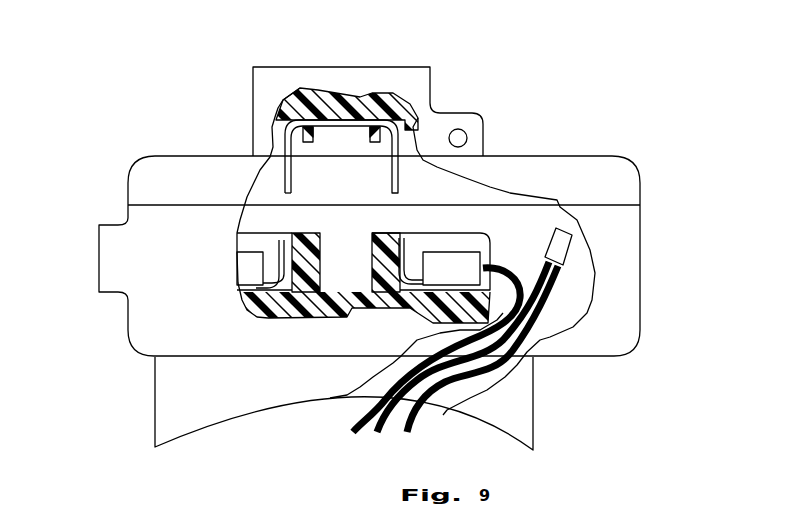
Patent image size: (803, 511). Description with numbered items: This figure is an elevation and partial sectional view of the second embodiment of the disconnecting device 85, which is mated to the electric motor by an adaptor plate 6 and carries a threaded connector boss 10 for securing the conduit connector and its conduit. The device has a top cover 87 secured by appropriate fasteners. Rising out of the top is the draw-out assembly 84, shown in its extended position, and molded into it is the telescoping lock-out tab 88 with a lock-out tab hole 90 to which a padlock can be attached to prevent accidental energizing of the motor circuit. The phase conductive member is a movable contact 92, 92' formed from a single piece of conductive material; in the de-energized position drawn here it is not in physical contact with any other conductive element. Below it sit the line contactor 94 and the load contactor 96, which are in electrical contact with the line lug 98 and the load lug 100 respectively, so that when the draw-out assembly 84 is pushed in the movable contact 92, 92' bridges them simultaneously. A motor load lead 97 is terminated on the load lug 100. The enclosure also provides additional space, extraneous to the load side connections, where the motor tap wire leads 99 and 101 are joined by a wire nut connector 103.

The adaptor plate 6 is at (537, 410).
The threaded connector boss 10 is at (113, 296).
The draw-out assembly 84 is at (253, 117).
The disconnecting device 85 is at (641, 297).
The top cover 87 is at (642, 186).
The telescoping lock-out tab 88 is at (456, 113).
The lock-out tab hole 90 is at (467, 137).
The movable contact 92 is at (341, 156).
The movable contact 92' is at (376, 163).
The line contactor 94 is at (281, 240).
The load contactor 96 is at (404, 238).
The line lug 98 is at (246, 270).
The load lug 100 is at (450, 252).
The motor load lead 97 is at (362, 408).
The motor tap wire lead 99 is at (375, 428).
The motor tap wire lead 101 is at (418, 420).
The wire nut connector 103 is at (553, 243).